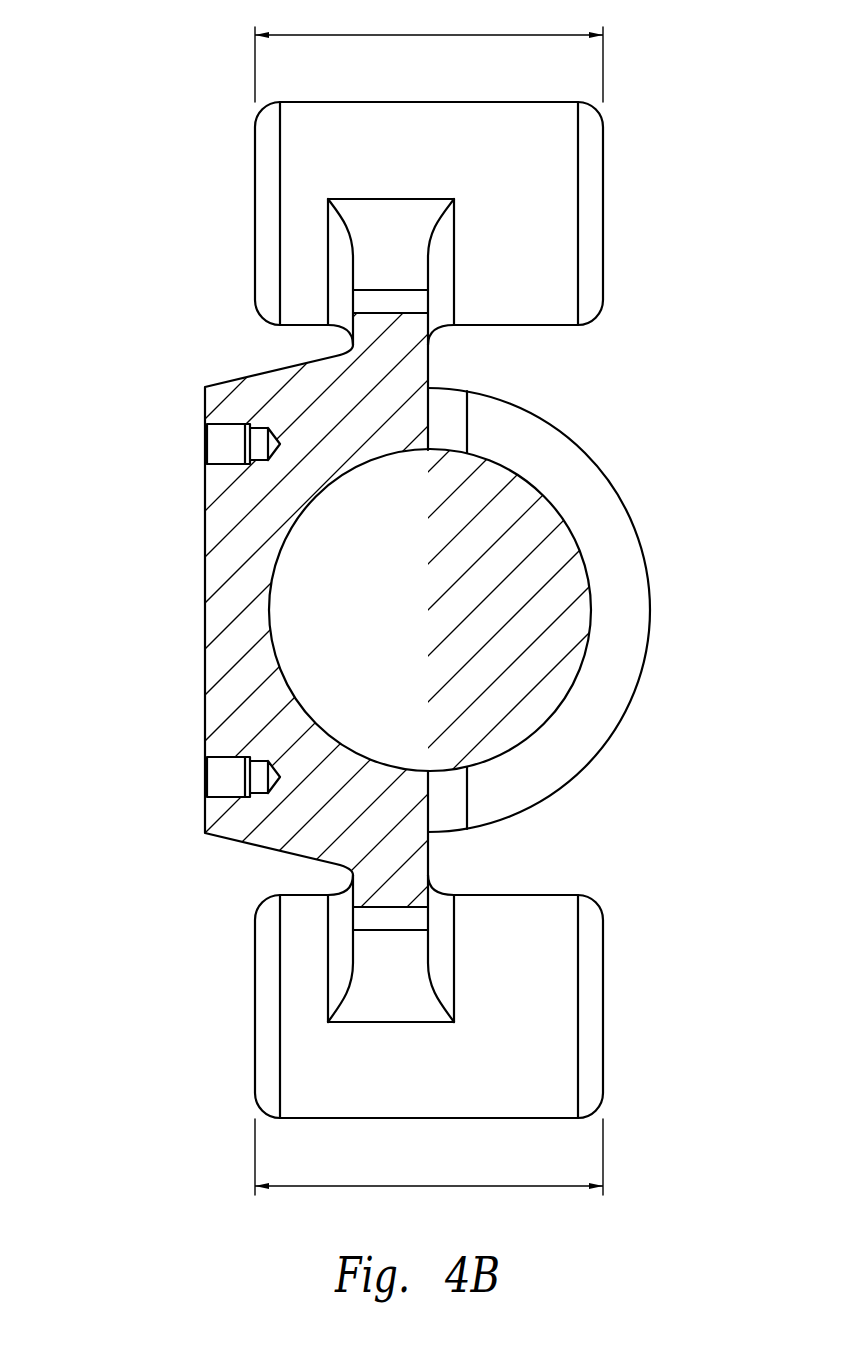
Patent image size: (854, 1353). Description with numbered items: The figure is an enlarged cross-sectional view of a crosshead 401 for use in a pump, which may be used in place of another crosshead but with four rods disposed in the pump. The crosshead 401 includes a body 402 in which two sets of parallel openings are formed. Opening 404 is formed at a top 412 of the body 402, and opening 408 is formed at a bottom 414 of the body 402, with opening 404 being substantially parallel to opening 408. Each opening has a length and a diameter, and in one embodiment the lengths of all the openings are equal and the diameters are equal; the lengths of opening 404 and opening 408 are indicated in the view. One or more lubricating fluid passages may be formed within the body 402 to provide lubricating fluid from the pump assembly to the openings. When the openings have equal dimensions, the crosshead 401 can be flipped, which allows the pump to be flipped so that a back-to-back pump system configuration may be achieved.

The crosshead 401 is at (136, 54).
The body 402 is at (205, 611).
The opening 404 is at (431, 102).
The opening 408 is at (431, 1119).
The top 412 is at (648, 78).
The bottom 414 is at (650, 1147).